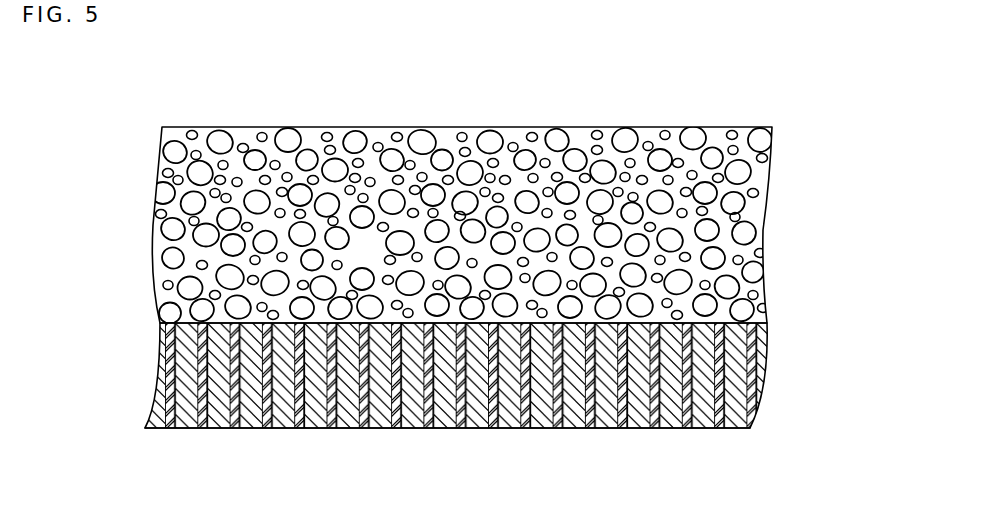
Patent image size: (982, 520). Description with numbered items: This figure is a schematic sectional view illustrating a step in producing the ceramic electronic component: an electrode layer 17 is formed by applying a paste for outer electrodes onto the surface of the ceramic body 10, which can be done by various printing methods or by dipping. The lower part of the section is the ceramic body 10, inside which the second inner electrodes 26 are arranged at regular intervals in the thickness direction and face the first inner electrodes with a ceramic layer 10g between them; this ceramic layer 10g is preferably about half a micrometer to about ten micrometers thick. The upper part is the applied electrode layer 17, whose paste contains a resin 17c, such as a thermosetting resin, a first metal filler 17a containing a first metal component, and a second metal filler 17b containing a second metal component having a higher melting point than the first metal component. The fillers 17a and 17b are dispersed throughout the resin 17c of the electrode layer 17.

The electrode layer 17 is at (511, 176).
The first metal filler 17a is at (745, 175).
The second metal filler 17b is at (757, 193).
The resin 17c is at (753, 215).
The ceramic body 10 is at (504, 384).
The second inner electrode 26 is at (760, 370).
The ceramic layer 10g is at (728, 403).